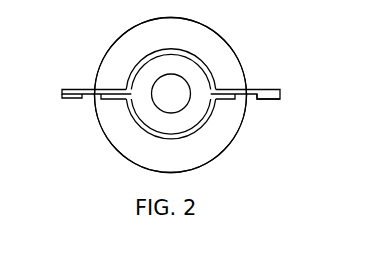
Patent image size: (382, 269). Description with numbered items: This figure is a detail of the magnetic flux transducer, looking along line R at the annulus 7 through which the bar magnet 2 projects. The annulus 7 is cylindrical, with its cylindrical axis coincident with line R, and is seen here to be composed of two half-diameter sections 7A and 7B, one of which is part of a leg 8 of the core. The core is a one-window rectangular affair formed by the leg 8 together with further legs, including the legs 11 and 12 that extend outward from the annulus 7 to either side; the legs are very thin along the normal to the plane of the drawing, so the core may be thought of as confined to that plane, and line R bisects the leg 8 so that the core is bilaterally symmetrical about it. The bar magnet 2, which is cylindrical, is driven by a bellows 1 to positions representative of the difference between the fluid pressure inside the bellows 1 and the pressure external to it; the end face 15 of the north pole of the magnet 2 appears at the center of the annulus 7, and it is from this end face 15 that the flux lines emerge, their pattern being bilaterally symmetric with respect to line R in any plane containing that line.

The bellows 1 is at (118, 38).
The bar magnet 2 is at (164, 72).
The annulus 7 is at (177, 98).
The half-diameter section 7A is at (200, 55).
The half-diameter section 7B is at (182, 139).
The leg 8 is at (263, 90).
The leg 11 is at (77, 97).
The leg 12 is at (268, 97).
The end face 15 is at (168, 105).